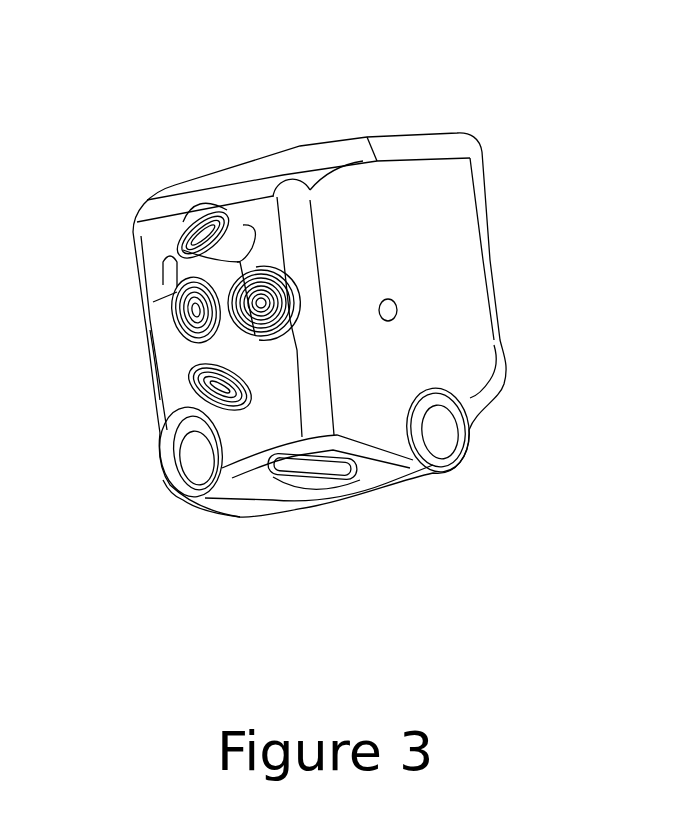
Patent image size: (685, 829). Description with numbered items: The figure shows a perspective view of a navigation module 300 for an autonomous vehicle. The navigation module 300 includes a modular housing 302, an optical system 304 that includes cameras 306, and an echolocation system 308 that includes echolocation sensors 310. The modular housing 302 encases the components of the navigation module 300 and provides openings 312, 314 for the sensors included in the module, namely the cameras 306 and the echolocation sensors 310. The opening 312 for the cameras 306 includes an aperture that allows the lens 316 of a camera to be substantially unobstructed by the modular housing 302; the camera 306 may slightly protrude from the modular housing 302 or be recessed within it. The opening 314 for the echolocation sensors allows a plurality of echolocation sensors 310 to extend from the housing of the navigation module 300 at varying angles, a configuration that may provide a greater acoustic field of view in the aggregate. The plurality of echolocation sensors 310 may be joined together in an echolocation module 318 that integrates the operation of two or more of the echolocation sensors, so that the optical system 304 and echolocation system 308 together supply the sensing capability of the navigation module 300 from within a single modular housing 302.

The navigation module 300 is at (483, 119).
The modular housing 302 is at (463, 332).
The optical system 304 is at (424, 520).
The cameras 306 is at (463, 437).
The echolocation system 308 is at (173, 370).
The echolocation sensors 310 is at (188, 238).
The opening for the cameras 312 is at (493, 360).
The opening for the echolocation sensors 314 is at (226, 490).
The lens 316 is at (493, 417).
The echolocation module 318 is at (225, 282).